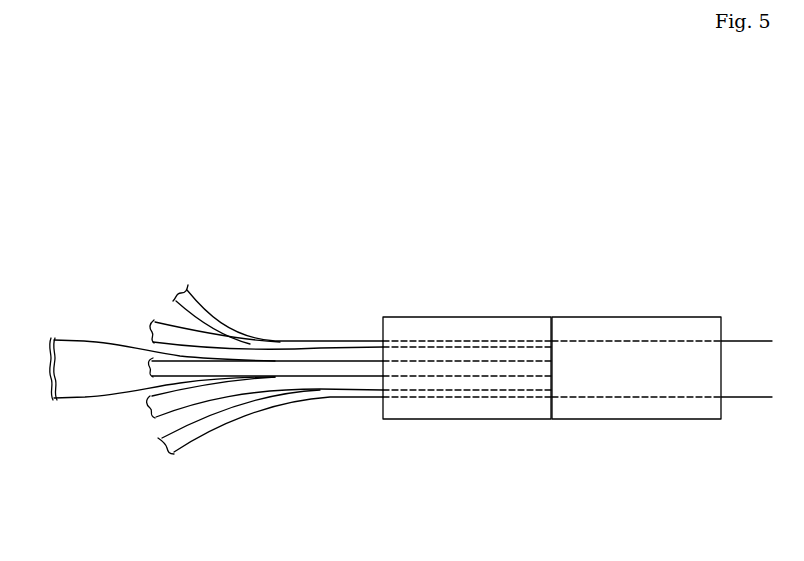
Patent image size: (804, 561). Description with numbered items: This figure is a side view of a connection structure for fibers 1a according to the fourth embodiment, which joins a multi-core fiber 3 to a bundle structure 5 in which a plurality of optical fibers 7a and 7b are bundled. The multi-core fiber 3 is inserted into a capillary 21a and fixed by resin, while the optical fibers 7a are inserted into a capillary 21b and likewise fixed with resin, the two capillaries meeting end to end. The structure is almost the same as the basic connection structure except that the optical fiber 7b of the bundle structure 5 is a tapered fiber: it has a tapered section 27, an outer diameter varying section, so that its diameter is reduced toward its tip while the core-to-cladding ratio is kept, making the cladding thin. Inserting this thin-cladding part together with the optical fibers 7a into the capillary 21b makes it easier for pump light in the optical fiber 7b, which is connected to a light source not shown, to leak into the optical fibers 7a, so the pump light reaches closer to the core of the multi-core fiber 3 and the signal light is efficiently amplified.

The connection structure for fibers 1a is at (564, 221).
The multi-core fiber 3 is at (692, 358).
The bundle structure 5 is at (284, 424).
The optical fiber 7a is at (228, 332).
The optical fiber 7b is at (80, 392).
The capillary 21a is at (667, 410).
The capillary 21b is at (400, 413).
The tapered section 27 is at (115, 393).